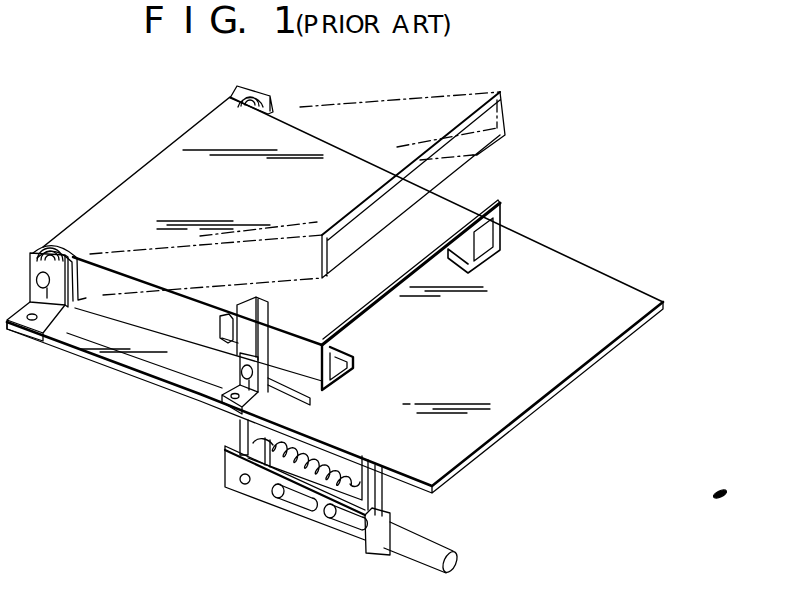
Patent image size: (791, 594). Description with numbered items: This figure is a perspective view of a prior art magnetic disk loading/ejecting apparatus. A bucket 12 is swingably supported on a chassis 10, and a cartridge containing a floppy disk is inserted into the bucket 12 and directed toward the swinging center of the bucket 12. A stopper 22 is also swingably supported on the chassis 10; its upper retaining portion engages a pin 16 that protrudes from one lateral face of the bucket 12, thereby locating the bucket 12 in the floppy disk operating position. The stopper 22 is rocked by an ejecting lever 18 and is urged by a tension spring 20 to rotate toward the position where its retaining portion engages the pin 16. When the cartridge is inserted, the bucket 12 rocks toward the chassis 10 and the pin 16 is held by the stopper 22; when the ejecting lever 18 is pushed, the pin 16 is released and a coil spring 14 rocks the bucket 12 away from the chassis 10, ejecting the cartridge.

The chassis 10 is at (574, 355).
The bucket 12 is at (458, 186).
The coil spring 14 is at (60, 242).
The pin 16 is at (218, 345).
The ejecting lever 18 is at (291, 513).
The tension spring 20 is at (322, 456).
The stopper 22 is at (222, 320).